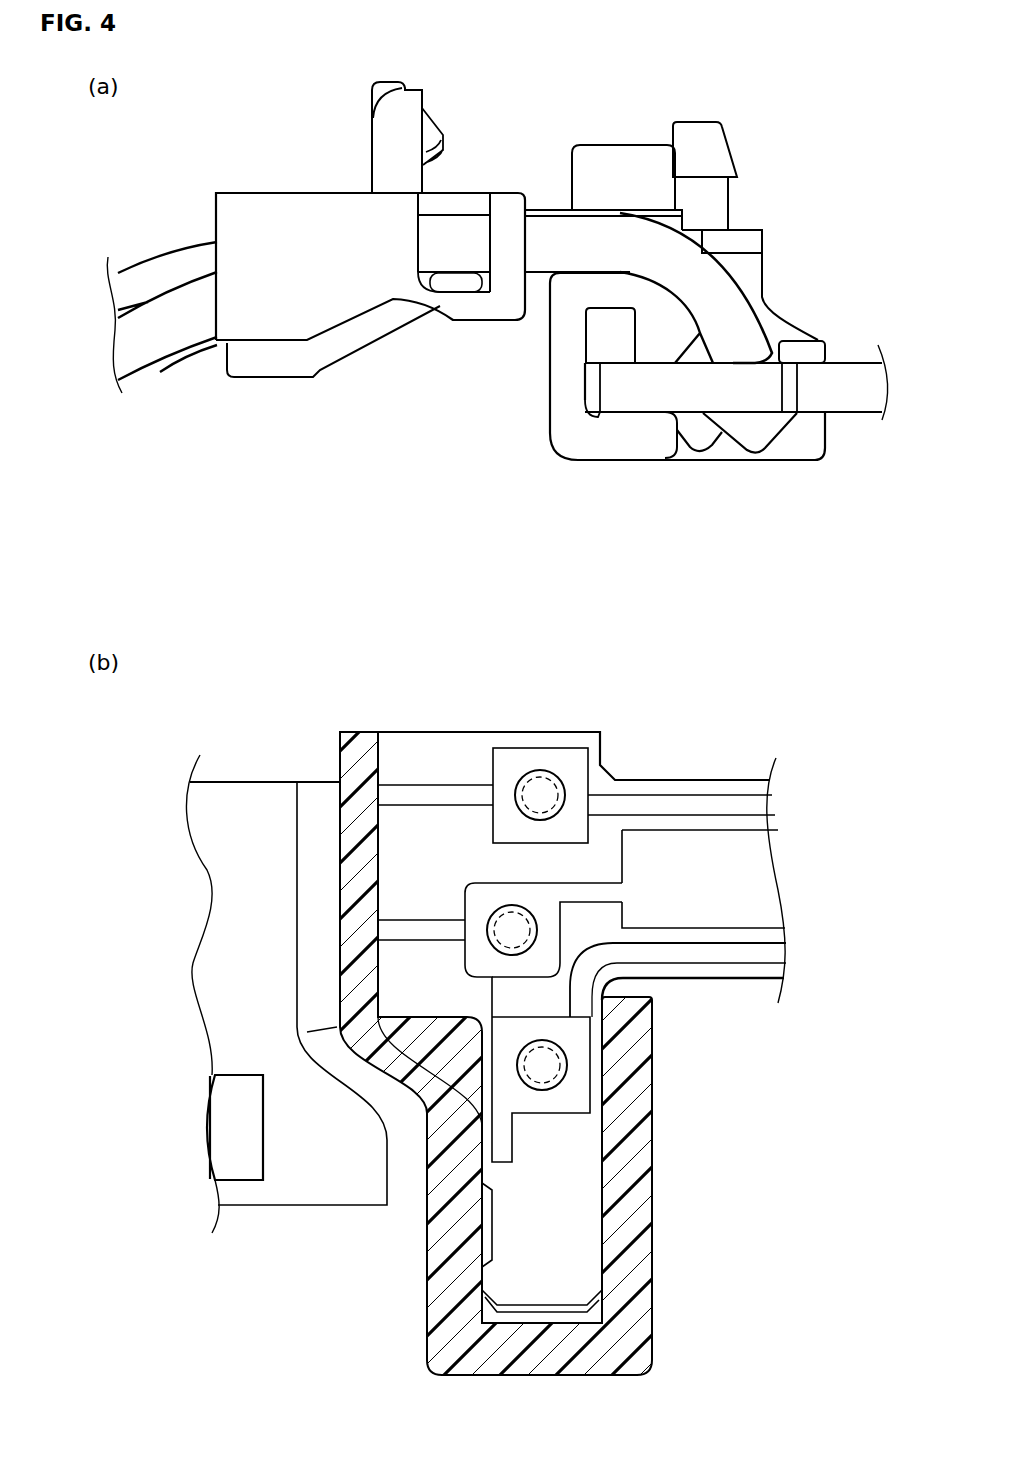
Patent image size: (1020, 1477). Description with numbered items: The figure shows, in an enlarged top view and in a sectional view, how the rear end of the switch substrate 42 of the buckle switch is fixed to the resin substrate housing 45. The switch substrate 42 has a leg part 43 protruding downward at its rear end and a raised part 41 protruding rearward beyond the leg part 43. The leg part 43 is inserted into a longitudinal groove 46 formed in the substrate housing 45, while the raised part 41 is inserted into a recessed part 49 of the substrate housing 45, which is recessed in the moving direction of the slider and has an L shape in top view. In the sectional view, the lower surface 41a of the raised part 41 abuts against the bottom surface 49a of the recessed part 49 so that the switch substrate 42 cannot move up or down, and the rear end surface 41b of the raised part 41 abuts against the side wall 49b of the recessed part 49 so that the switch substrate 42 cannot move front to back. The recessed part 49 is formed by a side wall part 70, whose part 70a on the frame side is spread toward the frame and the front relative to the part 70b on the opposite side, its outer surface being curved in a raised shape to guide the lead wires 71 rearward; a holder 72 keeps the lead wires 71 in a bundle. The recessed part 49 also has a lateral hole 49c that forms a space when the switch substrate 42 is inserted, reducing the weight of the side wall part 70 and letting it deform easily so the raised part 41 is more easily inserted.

The raised part 41 is at (655, 388).
The lower surface 41a is at (340, 1090).
The rear end surface 41b is at (585, 386).
The switch substrate 42 is at (856, 352).
The leg part 43 is at (548, 1207).
The substrate housing 45 is at (748, 140).
The longitudinal groove 46 is at (602, 1045).
The recessed part 49 is at (632, 411).
The bottom surface 49a is at (380, 1018).
The side wall 49b is at (530, 394).
The lateral hole 49c is at (608, 340).
The side wall part 70 is at (553, 458).
The part on the frame side 70a is at (632, 295).
The part on the opposite side to the frame side 70b is at (592, 444).
The lead wires 71 is at (548, 240).
The holder 72 is at (272, 240).